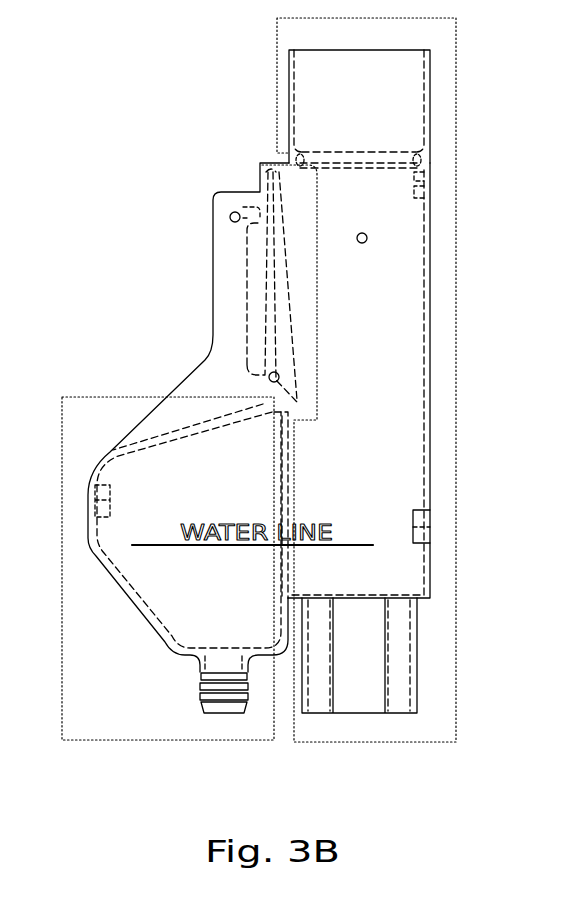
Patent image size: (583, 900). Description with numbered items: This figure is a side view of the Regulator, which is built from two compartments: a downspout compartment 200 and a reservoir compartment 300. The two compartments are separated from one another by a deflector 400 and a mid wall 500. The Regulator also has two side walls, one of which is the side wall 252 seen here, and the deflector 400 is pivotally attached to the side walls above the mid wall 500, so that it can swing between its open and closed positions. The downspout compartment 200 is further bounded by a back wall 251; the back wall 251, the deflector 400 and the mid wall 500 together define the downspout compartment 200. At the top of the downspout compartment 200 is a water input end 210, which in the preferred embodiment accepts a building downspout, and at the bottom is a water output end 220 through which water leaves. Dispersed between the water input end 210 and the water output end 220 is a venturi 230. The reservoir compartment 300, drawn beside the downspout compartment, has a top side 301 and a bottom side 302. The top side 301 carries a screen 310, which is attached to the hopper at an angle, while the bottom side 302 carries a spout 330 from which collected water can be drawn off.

The downspout compartment 200 is at (276, 52).
The water input end 210 is at (288, 104).
The venturi 230 is at (318, 158).
The back wall 251 is at (432, 325).
The side wall 252 is at (3, 278).
The water output end 220 is at (340, 690).
The reservoir compartment 300 is at (102, 393).
The top side 301 is at (172, 420).
The bottom side 302 is at (257, 720).
The screen 310 is at (140, 437).
The spout 330 is at (198, 697).
The deflector 400 is at (247, 277).
The mid wall 500 is at (295, 448).